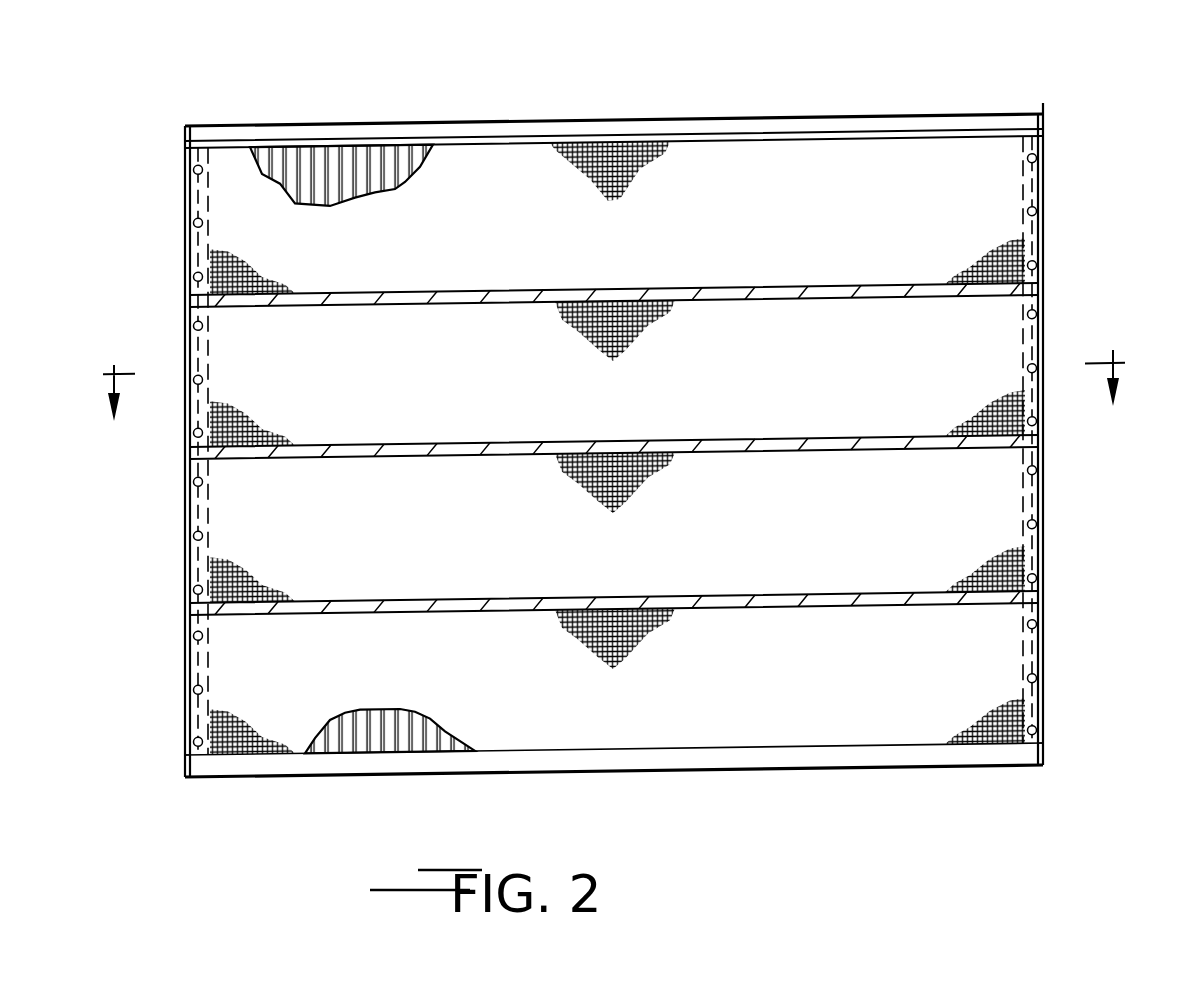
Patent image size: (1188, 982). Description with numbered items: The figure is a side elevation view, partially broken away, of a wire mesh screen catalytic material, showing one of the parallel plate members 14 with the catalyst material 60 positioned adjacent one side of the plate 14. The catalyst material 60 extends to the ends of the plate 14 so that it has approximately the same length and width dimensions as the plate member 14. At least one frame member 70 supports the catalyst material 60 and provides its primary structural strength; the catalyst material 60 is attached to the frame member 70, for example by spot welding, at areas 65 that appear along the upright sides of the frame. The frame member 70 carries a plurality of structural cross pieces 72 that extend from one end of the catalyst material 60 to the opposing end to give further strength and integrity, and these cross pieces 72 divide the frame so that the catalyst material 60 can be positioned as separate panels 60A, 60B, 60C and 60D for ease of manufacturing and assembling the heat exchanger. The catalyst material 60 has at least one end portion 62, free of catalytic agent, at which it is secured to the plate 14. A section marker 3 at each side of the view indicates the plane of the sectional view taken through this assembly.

The plate 14 is at (304, 165).
The frame member 70 is at (489, 122).
The end portion 62 is at (185, 158).
The areas 65 is at (188, 214).
The catalyst material 60 is at (643, 181).
The structural cross pieces 72 is at (745, 295).
The panel 60A is at (617, 232).
The panel 60B is at (617, 386).
The panel 60C is at (617, 542).
The panel 60D is at (617, 694).
The section line of FIG. 3 is at (610, 394).